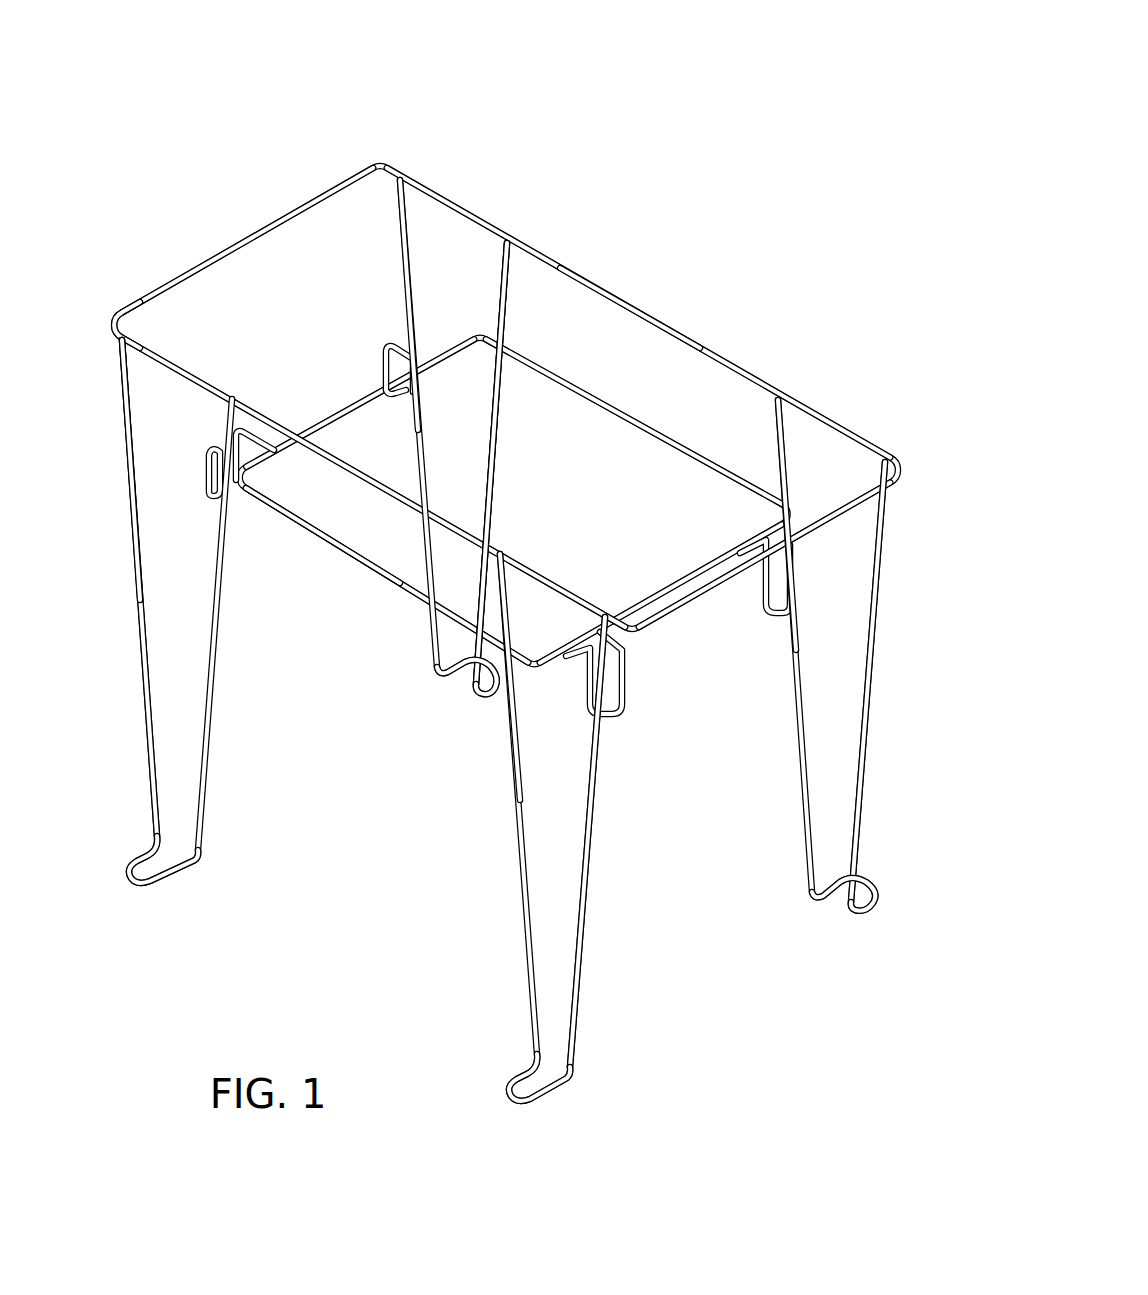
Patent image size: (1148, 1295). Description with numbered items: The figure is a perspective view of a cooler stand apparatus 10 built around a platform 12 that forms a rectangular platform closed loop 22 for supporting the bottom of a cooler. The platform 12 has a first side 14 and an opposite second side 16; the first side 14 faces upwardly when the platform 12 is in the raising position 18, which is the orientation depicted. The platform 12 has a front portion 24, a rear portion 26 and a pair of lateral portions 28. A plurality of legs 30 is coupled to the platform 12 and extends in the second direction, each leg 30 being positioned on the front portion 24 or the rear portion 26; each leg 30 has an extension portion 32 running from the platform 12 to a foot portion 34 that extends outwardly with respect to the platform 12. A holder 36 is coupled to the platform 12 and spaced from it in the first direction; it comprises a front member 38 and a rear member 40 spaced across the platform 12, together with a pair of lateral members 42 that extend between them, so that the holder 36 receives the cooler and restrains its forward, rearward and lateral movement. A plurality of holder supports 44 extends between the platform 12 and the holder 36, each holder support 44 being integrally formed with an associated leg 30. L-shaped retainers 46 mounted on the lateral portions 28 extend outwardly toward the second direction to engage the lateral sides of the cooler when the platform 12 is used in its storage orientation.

The cooler stand apparatus 10 is at (736, 120).
The platform 12 is at (329, 590).
The first side 14 is at (500, 375).
The second side 16 is at (487, 521).
The raising position 18 is at (626, 385).
The platform closed loop 22 is at (494, 420).
The front portion 24 is at (393, 590).
The rear portion 26 is at (668, 442).
The lateral portions 28 is at (313, 430).
The leg 30 is at (502, 630).
The extension portion 32 is at (493, 423).
The foot portion 34 is at (152, 878).
The holder 36 is at (88, 308).
The front member 38 is at (163, 362).
The rear member 40 is at (600, 290).
The lateral members 42 is at (268, 228).
The holder support 44 is at (407, 240).
The retainer 46 is at (383, 367).